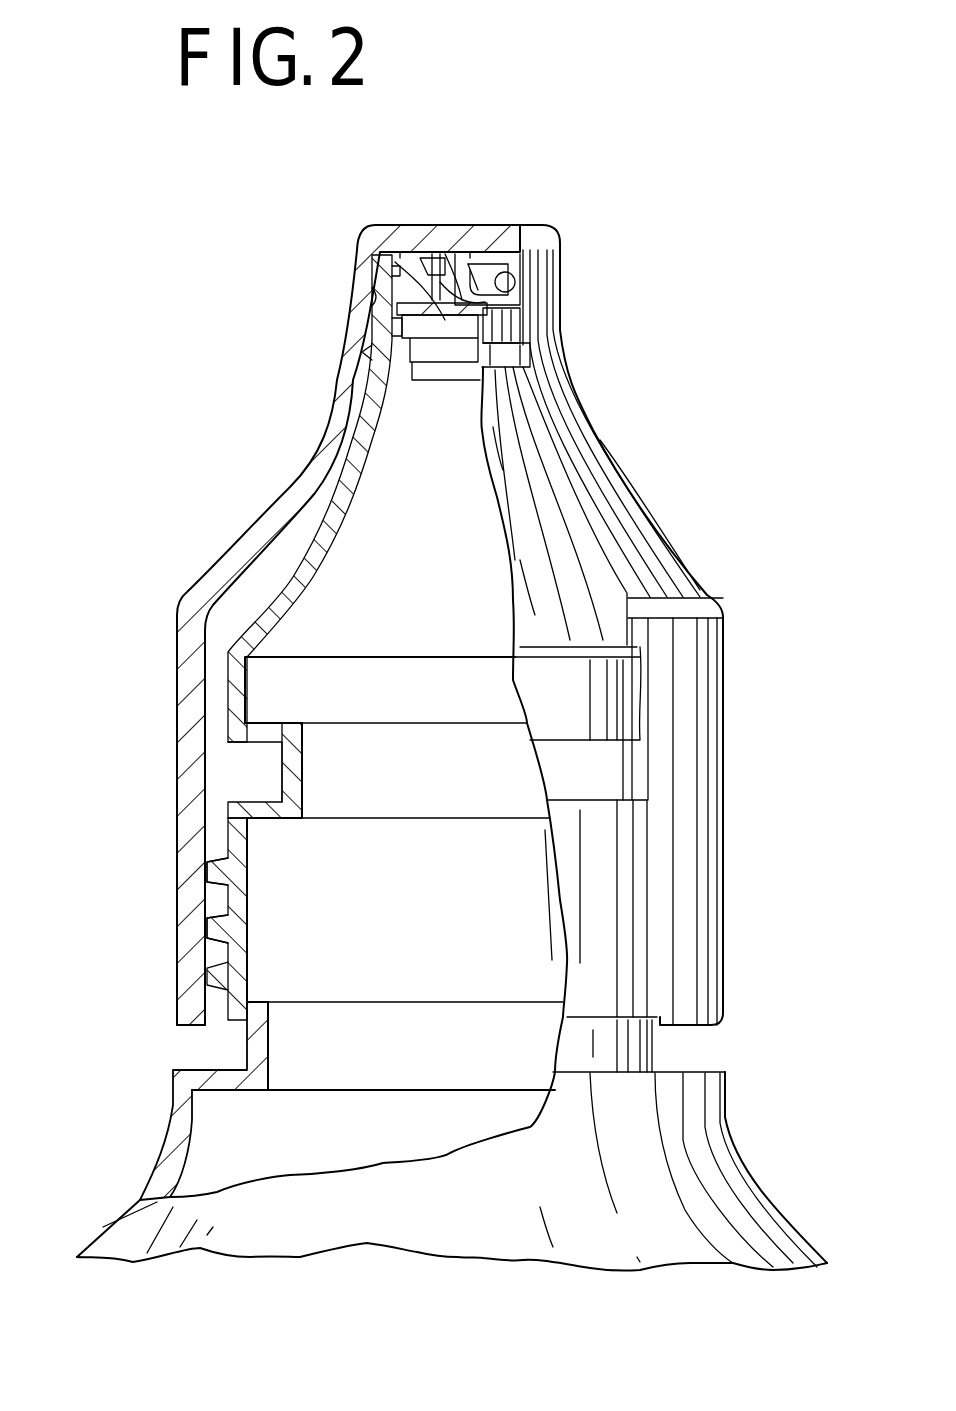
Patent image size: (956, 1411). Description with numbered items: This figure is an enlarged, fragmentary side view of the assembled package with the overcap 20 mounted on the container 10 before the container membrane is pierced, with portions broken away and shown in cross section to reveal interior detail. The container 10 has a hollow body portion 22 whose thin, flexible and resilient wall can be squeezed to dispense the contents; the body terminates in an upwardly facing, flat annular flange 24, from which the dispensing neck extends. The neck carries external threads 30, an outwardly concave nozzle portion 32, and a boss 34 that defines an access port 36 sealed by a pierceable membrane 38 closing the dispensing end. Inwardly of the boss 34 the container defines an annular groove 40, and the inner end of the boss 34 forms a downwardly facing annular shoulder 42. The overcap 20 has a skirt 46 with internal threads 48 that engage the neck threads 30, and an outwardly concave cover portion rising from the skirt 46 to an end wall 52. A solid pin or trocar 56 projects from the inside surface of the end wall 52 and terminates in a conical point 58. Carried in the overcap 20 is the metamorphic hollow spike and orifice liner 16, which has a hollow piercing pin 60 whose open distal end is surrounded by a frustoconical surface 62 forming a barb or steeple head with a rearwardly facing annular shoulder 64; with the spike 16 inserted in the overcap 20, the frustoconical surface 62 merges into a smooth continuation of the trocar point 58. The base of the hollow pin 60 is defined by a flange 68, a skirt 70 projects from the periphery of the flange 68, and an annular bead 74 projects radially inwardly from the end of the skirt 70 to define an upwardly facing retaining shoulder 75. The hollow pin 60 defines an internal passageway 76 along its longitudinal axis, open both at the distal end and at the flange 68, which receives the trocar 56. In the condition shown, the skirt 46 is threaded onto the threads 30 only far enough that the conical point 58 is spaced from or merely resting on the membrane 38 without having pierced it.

The container 10 is at (107, 1163).
The hollow spike and orifice liner 16 is at (515, 275).
The overcap 20 is at (567, 237).
The hollow body portion 22 is at (165, 1128).
The annular flange 24 is at (707, 1070).
The external threads 30 is at (207, 927).
The outwardly concave nozzle portion 32 is at (578, 522).
The boss 34 is at (527, 337).
The access port 36 is at (387, 390).
The pierceable membrane 38 is at (380, 263).
The annular groove 40 is at (513, 352).
The annular shoulder 42 is at (370, 353).
The skirt 46 is at (186, 971).
The internal threads 48 is at (232, 955).
The end wall 52 is at (500, 240).
The pin or trocar 56 is at (453, 327).
The conical point 58 is at (470, 300).
The hollow pin 60 is at (427, 255).
The frustoconical surface 62 is at (413, 260).
The annular shoulder 64 is at (467, 287).
The flange 68 is at (423, 250).
The skirt 70 is at (380, 297).
The annular bead 74 is at (390, 327).
The retaining shoulder 75 is at (390, 270).
The internal passageway 76 is at (462, 283).